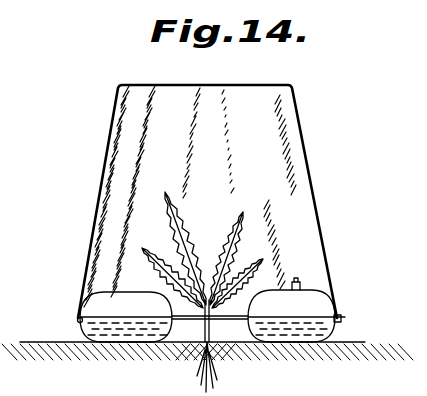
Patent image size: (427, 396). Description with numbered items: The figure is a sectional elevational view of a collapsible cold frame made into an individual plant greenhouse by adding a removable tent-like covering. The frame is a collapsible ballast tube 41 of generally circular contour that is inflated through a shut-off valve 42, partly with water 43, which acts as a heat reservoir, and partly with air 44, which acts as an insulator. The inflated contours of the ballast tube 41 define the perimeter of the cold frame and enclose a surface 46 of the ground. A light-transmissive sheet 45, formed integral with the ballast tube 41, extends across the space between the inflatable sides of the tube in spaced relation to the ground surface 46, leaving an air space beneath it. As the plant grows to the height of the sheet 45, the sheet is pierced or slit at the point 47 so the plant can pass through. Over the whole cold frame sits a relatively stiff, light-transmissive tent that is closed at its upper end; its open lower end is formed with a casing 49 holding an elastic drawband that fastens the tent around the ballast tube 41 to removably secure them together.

The ground surface 46 is at (297, 113).
The shut-off valve 42 is at (297, 278).
The collapsible ballast tube 41 is at (331, 291).
The casing 49 is at (341, 320).
The air 44 is at (80, 307).
The water 43 is at (82, 326).
The sheet 45 is at (179, 331).
The slit 47 is at (214, 323).